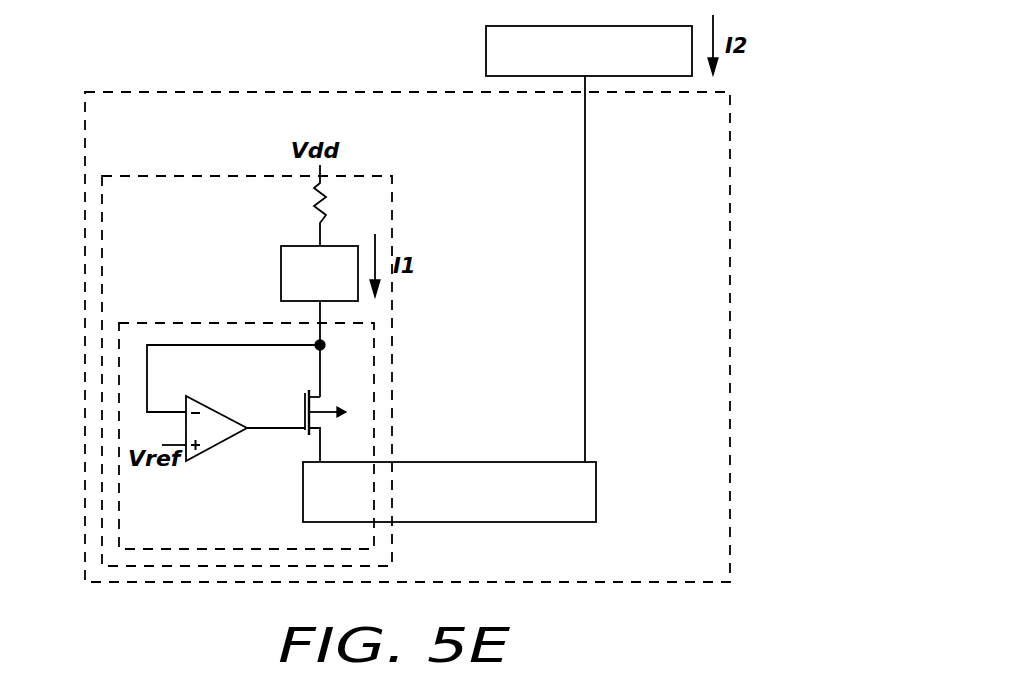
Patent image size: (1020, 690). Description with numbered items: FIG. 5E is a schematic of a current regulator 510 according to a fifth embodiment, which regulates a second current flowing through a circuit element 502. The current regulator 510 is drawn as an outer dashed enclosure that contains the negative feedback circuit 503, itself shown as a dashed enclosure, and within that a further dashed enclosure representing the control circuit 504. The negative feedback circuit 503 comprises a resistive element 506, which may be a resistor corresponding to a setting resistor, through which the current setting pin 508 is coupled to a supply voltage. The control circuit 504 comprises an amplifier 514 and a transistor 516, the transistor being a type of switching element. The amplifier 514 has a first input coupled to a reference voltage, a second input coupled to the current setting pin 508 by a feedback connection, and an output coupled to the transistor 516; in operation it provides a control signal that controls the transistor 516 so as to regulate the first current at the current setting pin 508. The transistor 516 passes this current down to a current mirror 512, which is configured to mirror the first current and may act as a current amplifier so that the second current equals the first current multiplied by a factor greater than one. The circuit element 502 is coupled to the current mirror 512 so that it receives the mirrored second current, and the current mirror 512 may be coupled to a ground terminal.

The circuit element 502 is at (486, 38).
The negative feedback circuit 503 is at (102, 423).
The control circuit 504 is at (119, 487).
The resistive element 506 is at (313, 203).
The current setting pin 508 is at (281, 272).
The current regulator 510 is at (85, 362).
The current mirror 512 is at (596, 477).
The amplifier 514 is at (206, 453).
The transistor 516 is at (315, 401).